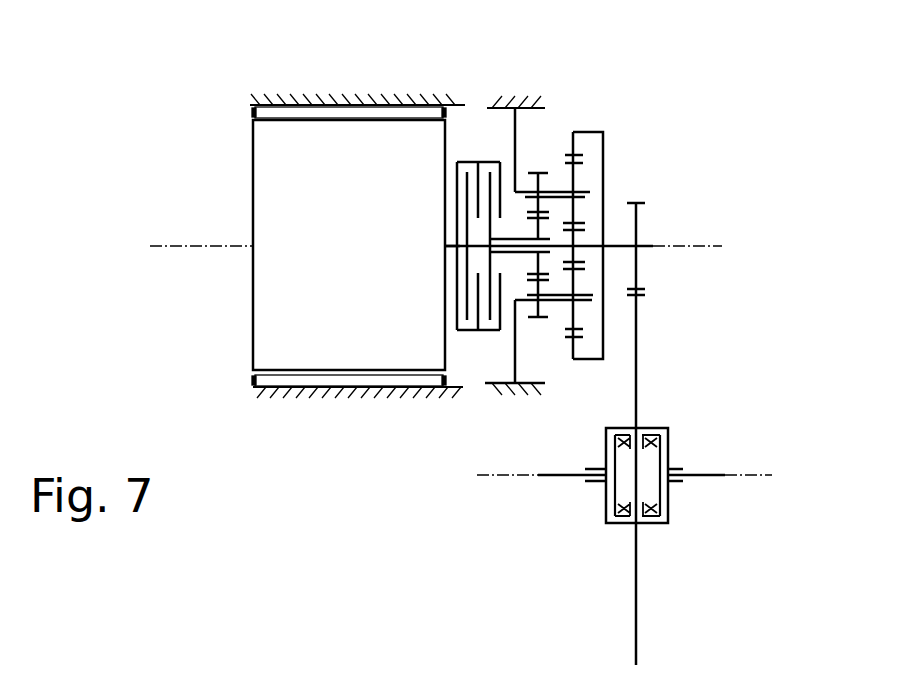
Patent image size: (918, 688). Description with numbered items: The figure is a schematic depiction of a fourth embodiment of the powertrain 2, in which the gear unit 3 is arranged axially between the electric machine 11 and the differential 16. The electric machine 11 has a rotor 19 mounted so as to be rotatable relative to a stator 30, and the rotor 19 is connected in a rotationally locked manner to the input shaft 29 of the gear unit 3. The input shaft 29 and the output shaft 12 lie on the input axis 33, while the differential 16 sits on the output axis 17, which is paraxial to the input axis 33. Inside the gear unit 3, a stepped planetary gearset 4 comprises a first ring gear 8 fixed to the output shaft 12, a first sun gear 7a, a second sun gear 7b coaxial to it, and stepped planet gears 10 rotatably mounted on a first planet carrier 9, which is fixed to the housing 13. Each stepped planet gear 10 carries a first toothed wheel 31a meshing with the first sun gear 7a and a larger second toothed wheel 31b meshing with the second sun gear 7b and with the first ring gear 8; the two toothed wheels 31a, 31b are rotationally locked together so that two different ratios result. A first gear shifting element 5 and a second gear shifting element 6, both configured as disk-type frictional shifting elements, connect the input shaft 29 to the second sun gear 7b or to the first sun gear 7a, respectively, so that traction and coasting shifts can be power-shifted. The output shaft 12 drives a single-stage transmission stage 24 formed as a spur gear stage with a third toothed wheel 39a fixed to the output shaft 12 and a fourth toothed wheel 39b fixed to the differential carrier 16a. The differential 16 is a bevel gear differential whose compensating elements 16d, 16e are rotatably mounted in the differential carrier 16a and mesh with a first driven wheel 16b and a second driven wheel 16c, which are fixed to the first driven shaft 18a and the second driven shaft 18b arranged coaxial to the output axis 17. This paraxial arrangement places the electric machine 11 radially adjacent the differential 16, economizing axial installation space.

The powertrain 2 is at (722, 83).
The gear unit 3 is at (636, 121).
The stepped planetary gearset 4 is at (547, 118).
The first gear shifting element 5 is at (462, 140).
The second gear shifting element 6 is at (487, 146).
The first sun gear 7a is at (546, 224).
The second sun gear 7b is at (588, 238).
The first ring gear 8 is at (605, 130).
The first planet carrier 9 is at (588, 190).
The stepped planet gear 10 is at (560, 305).
The electric machine 11 is at (334, 414).
The output shaft 12 is at (620, 250).
The housing 13 is at (512, 106).
The differential 16 is at (652, 552).
The differential carrier 16a is at (617, 518).
The first driven wheel 16b is at (610, 492).
The second driven wheel 16c is at (665, 493).
The compensating element 16d is at (655, 435).
The compensating element 16e is at (650, 515).
The output axis 17 is at (772, 477).
The first driven shaft 18a is at (570, 477).
The second driven shaft 18b is at (705, 480).
The rotor 19 is at (270, 297).
The transmission stage 24 is at (697, 293).
The input shaft 29 is at (448, 250).
The stator 30 is at (292, 382).
The first toothed wheel 31a is at (575, 154).
The second toothed wheel 31b is at (584, 162).
The input axis 33 is at (185, 243).
The third toothed wheel 39a is at (638, 258).
The fourth toothed wheel 39b is at (638, 338).